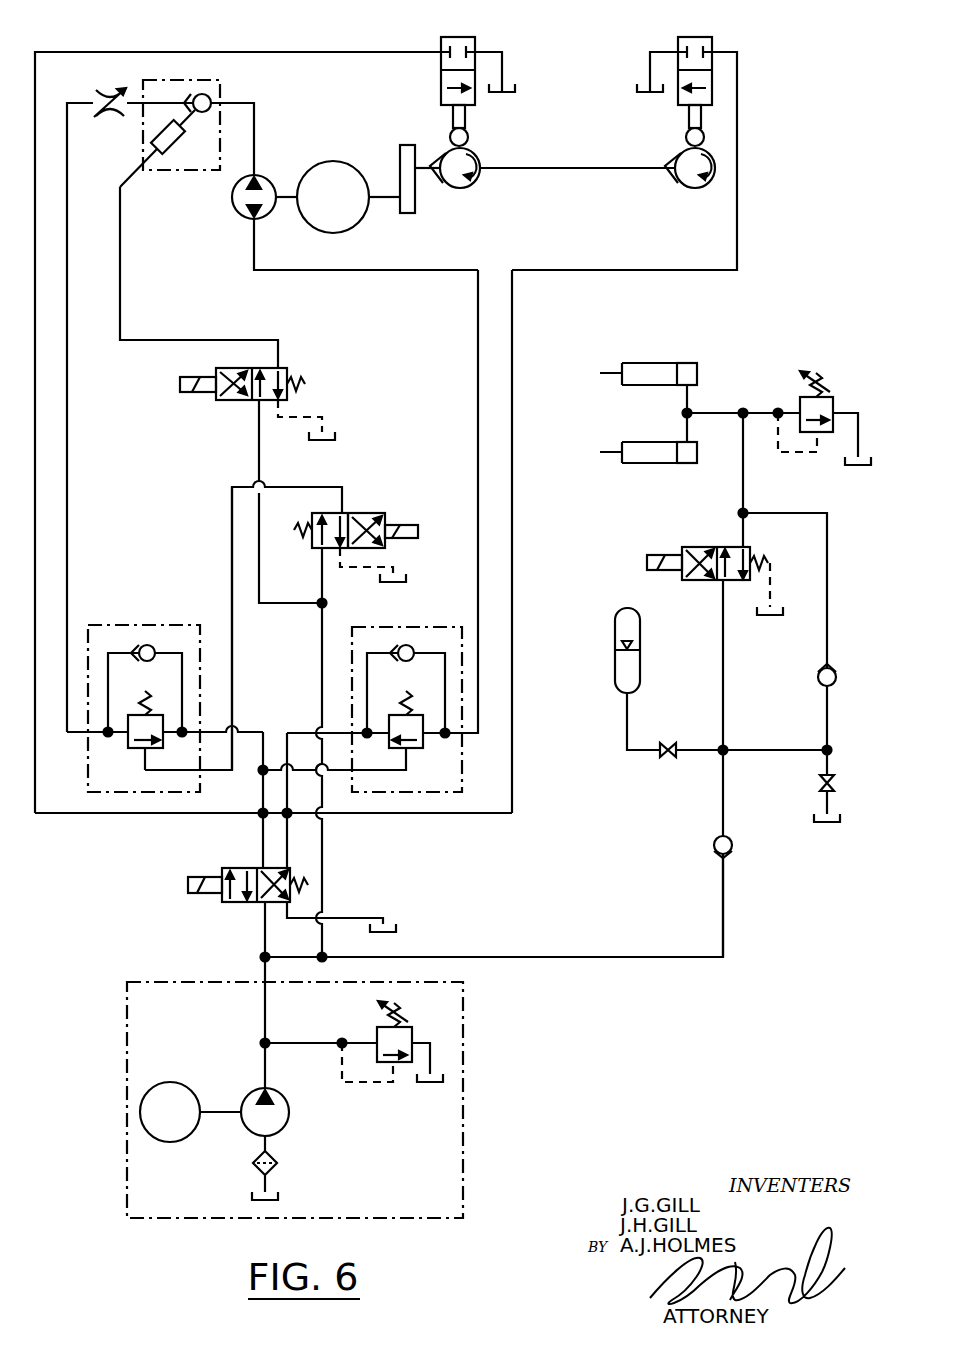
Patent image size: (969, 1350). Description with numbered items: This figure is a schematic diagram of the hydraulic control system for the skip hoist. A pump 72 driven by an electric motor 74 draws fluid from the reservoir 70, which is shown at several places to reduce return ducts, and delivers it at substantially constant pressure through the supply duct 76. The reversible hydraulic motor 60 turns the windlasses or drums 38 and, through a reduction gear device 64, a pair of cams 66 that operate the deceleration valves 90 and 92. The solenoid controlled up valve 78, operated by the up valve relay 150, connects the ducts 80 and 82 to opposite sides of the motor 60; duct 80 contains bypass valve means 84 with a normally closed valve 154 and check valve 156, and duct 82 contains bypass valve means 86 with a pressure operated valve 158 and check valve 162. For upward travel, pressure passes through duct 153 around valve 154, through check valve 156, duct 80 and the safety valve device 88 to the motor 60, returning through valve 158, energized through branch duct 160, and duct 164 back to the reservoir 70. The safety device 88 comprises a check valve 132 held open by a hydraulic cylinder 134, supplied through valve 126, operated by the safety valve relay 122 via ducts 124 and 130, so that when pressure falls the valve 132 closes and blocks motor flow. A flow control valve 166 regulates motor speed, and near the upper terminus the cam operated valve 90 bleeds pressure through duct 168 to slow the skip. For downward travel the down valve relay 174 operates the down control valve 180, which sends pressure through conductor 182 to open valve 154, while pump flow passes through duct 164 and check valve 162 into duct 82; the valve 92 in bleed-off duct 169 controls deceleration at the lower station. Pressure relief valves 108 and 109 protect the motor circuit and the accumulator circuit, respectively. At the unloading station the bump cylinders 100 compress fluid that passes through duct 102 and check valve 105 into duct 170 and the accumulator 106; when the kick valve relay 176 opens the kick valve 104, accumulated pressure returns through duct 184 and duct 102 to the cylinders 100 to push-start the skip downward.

The windlasses or drums 38 is at (357, 220).
The reversible hydraulic motor 60 is at (243, 212).
The reduction gear device 64 is at (415, 204).
The cams 66 is at (472, 183).
The reservoir 70 is at (517, 95).
The pump 72 is at (292, 1125).
The electric motor 74 is at (188, 1082).
The supply duct 76 is at (607, 962).
The up valve 78 is at (238, 867).
The duct 80 is at (68, 498).
The duct 82 is at (478, 468).
The bypass valve means 84 is at (122, 625).
The bypass valve means 86 is at (439, 627).
The safety valve device 88 is at (202, 170).
The deceleration valve 90 is at (477, 41).
The deceleration valve 92 is at (678, 43).
The bump cylinders 100 is at (643, 405).
The duct 102 is at (745, 490).
The solenoid kick valve 104 is at (690, 545).
The check valve 105 is at (835, 672).
The accumulator 106 is at (640, 672).
The pressure relief valve 108 is at (403, 1023).
The pressure relief valve 109 is at (835, 402).
The safety valve relay 122 is at (180, 382).
The duct 124 is at (263, 588).
The valve 126 is at (222, 400).
The duct 130 is at (122, 303).
The check valve 132 is at (207, 98).
The hydraulic cylinder 134 is at (162, 155).
The up valve relay 150 is at (192, 893).
The duct 153 is at (247, 730).
The normally closed valve 154 is at (128, 743).
The check valve 156 is at (149, 646).
The pressure operated valve 158 is at (418, 752).
The branch duct 160 is at (368, 773).
The check valve 162 is at (402, 648).
The duct 164 is at (289, 845).
The flow control valve 166 is at (115, 93).
The duct 168 is at (277, 52).
The bleed-off duct 169 is at (513, 500).
The duct 170 is at (767, 752).
The down valve relay 174 is at (410, 523).
The kick valve relay 176 is at (662, 552).
The down control valve 180 is at (365, 512).
The conductor 182 is at (233, 677).
The duct 184 is at (725, 700).